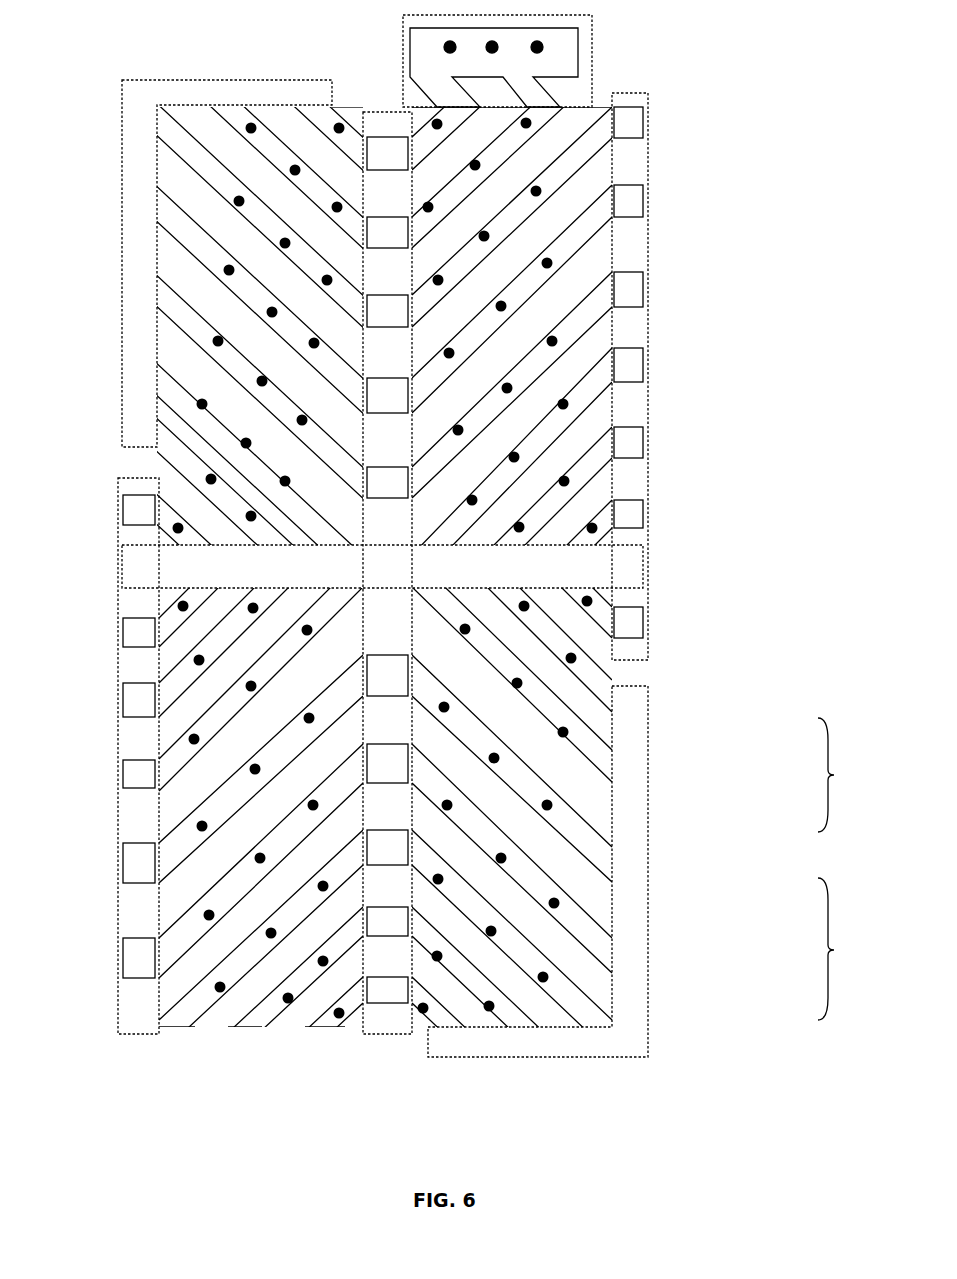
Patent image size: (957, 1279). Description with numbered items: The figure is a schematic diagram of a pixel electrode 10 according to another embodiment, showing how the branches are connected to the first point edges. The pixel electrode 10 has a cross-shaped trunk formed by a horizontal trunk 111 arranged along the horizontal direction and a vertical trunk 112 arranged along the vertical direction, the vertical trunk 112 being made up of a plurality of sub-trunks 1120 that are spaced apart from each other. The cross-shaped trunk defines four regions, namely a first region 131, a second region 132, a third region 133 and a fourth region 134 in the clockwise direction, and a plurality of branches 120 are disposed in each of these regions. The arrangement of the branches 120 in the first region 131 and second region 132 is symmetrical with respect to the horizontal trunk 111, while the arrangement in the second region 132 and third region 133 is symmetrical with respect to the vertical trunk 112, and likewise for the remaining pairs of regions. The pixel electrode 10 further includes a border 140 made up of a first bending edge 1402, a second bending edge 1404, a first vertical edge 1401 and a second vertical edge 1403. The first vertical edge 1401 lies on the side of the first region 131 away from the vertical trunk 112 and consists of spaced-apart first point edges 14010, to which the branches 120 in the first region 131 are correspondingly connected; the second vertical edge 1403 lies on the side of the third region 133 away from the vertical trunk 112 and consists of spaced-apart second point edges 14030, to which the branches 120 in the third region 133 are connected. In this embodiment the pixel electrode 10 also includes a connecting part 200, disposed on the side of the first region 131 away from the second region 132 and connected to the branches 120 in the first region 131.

The pixel electrode 10 is at (461, 596).
The horizontal trunk 111 is at (565, 568).
The vertical trunk 112 is at (385, 110).
The sub-trunk 1120 is at (378, 990).
The branch 120 is at (247, 117).
The first region 131 is at (585, 185).
The second region 132 is at (585, 970).
The third region 133 is at (193, 963).
The fourth region 134 is at (180, 187).
The border 140 is at (461, 566).
The first vertical edge 1401 is at (650, 104).
The first point edge 14010 is at (630, 205).
The first bending edge 1402 is at (650, 688).
The second vertical edge 1403 is at (117, 597).
The second point edge 14030 is at (143, 703).
The second bending edge 1404 is at (122, 95).
The connecting part 200 is at (594, 50).